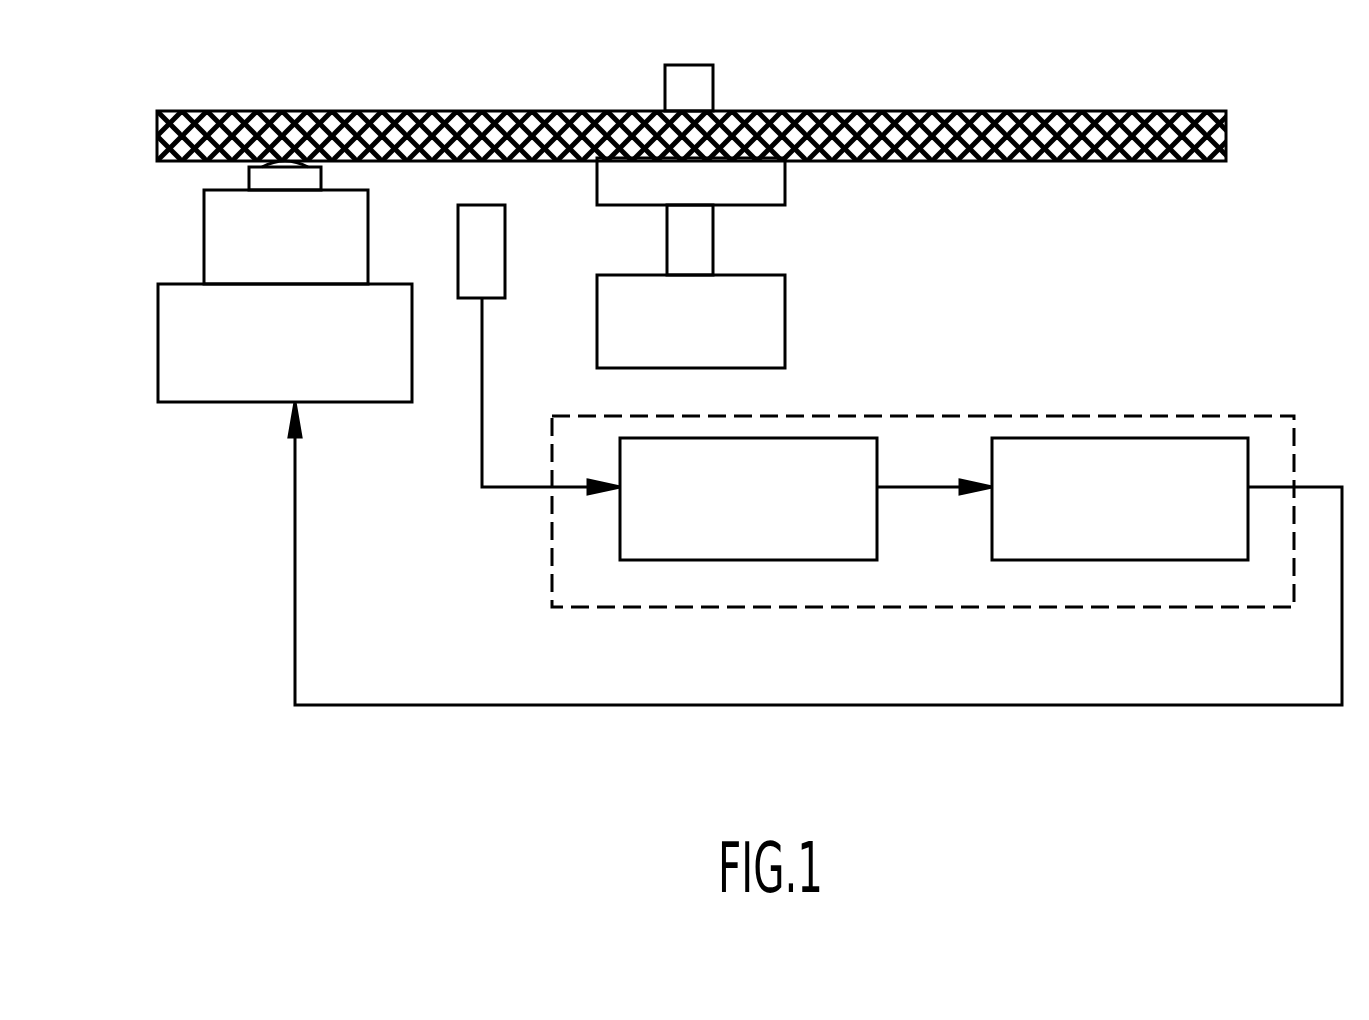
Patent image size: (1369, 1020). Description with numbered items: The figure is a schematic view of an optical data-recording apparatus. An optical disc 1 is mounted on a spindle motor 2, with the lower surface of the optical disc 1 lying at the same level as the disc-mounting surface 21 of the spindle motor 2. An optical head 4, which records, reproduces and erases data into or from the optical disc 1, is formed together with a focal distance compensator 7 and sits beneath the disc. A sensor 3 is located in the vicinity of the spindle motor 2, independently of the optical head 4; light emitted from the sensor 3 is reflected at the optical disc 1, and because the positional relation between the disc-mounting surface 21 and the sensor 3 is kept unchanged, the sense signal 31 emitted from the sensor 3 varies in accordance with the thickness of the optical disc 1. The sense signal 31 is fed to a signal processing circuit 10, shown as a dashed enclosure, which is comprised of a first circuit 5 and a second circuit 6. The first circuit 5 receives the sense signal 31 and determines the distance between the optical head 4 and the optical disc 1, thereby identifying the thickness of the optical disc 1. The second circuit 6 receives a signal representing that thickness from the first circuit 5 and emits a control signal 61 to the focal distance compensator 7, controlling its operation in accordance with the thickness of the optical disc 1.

The optical disc 1 is at (930, 110).
The disc-mounting surface 21 is at (785, 183).
The spindle motor 2 is at (785, 320).
The sensor 3 is at (505, 243).
The sense signal 31 is at (500, 490).
The optical head 4 is at (204, 229).
The focal distance compensator 7 is at (158, 337).
The signal processing circuit 10 is at (1250, 416).
The first circuit 5 is at (751, 560).
The second circuit 6 is at (1125, 438).
The control signal 61 is at (1190, 705).